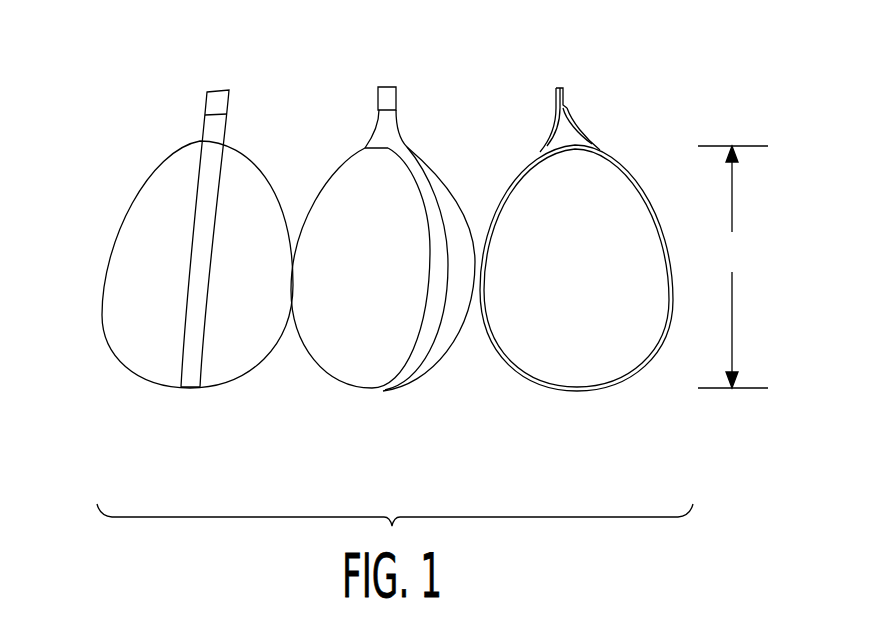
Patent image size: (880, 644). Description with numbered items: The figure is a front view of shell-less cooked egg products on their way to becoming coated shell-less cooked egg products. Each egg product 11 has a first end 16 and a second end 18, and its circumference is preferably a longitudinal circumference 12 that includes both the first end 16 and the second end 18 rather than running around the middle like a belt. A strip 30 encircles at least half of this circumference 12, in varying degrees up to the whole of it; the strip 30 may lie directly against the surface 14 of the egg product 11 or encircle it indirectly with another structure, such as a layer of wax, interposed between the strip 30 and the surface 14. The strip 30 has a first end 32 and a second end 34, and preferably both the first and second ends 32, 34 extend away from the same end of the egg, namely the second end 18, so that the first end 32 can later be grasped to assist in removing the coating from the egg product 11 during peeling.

The egg product 11 is at (276, 265).
The longitudinal circumference 12 is at (722, 267).
The surface of the egg product 14 is at (572, 247).
The first end of the egg product 16 is at (376, 277).
The second end of the egg product 18 is at (188, 148).
The strip 30 is at (437, 220).
The first end of the strip 32 is at (555, 105).
The second end of the strip 34 is at (570, 115).